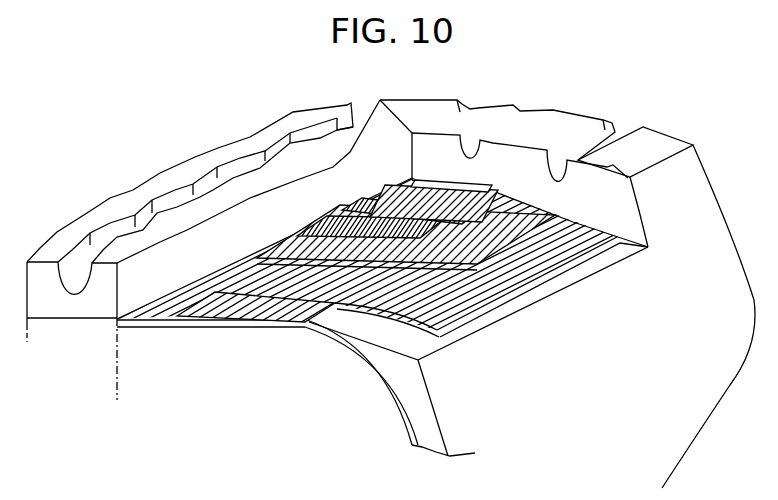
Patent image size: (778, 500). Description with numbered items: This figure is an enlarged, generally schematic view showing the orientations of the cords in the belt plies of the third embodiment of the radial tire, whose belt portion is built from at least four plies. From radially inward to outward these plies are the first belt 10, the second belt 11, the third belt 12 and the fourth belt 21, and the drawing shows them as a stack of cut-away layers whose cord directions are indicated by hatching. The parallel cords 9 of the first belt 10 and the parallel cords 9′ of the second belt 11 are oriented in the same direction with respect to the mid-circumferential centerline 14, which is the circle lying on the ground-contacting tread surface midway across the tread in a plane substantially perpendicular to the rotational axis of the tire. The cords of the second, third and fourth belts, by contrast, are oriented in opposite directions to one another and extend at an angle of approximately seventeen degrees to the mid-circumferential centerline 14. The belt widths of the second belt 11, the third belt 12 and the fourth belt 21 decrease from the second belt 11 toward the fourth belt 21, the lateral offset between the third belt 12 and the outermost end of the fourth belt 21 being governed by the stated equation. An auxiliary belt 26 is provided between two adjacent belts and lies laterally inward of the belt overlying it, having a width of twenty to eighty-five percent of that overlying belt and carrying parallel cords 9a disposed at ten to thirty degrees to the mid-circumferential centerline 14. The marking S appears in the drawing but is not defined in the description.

The parallel cords 9 is at (331, 309).
The parallel cords 9′ is at (476, 302).
The parallel cords 9a is at (342, 217).
The first belt 10 is at (305, 328).
The second belt 11 is at (230, 267).
The third belt 12 is at (550, 200).
The mid-circumferential centerline 14 is at (417, 130).
The fourth belt 21 is at (483, 187).
The auxiliary belt 26 is at (342, 210).
The gap S is at (558, 252).